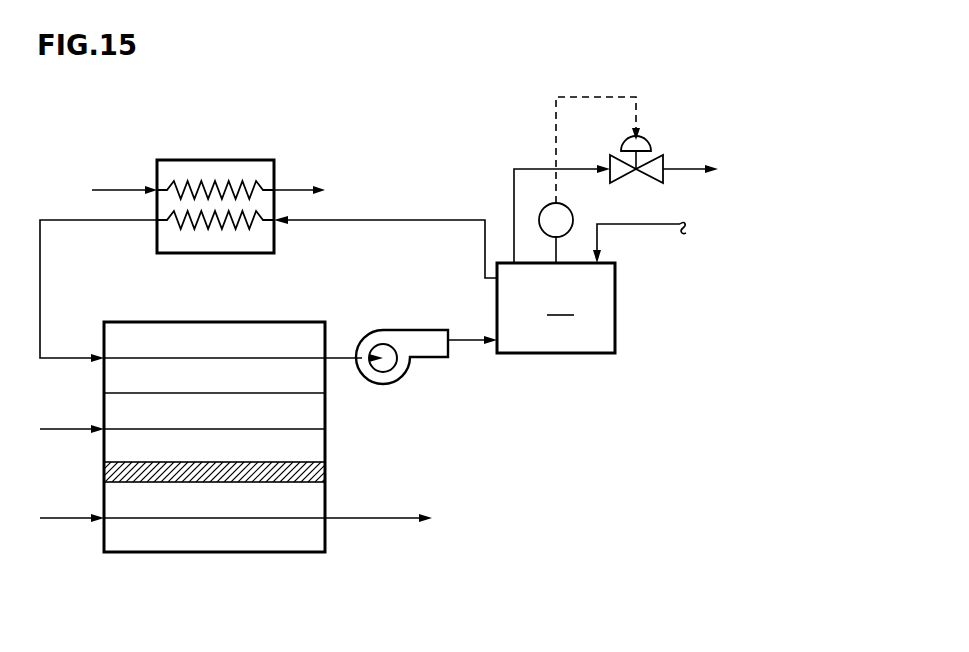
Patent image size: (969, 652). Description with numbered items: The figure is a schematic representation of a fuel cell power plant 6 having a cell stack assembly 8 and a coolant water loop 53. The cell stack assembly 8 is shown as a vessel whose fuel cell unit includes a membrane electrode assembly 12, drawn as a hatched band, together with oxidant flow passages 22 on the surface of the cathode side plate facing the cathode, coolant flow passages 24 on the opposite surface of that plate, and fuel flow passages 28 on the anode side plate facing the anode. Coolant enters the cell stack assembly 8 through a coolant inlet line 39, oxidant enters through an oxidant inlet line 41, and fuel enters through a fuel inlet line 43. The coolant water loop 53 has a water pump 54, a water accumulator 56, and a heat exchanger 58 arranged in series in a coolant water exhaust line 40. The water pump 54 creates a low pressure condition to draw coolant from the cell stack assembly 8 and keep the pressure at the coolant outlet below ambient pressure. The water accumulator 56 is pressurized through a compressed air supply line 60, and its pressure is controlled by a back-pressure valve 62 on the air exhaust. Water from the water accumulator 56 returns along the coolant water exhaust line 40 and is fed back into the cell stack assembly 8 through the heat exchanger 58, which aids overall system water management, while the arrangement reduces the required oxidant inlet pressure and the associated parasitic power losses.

The fuel cell power plant 6 is at (97, 143).
The cell stack assembly 8 is at (334, 312).
The membrane electrode assembly 12 is at (110, 470).
The oxidant flow passages 22 is at (310, 428).
The coolant flow passages 24 is at (210, 358).
The fuel flow passages 28 is at (222, 520).
The coolant inlet line 39 is at (60, 358).
The coolant water exhaust line 40 is at (403, 220).
The oxidant inlet line 41 is at (56, 429).
The fuel inlet line 43 is at (220, 518).
The coolant water loop 53 is at (332, 171).
The water pump 54 is at (392, 330).
The water accumulator 56 is at (556, 278).
The heat exchanger 58 is at (210, 160).
The compressed air supply line 60 is at (652, 224).
The back-pressure valve 62 is at (652, 143).